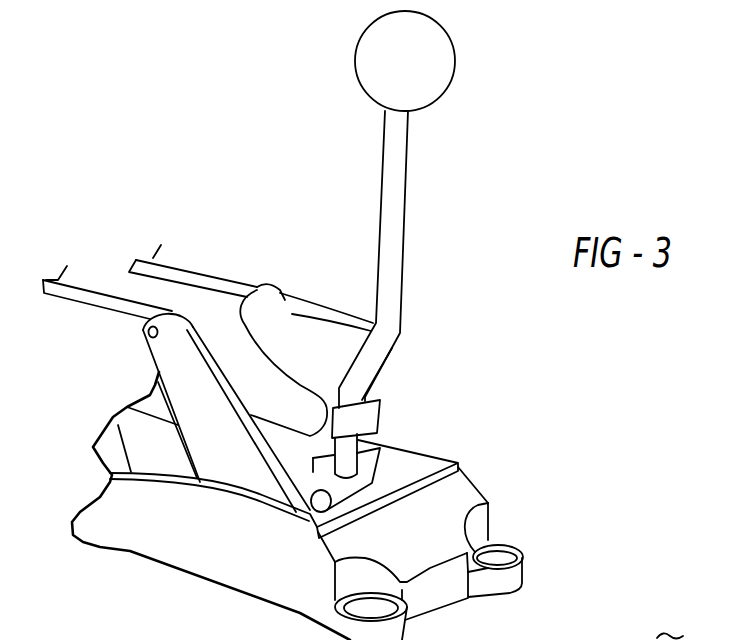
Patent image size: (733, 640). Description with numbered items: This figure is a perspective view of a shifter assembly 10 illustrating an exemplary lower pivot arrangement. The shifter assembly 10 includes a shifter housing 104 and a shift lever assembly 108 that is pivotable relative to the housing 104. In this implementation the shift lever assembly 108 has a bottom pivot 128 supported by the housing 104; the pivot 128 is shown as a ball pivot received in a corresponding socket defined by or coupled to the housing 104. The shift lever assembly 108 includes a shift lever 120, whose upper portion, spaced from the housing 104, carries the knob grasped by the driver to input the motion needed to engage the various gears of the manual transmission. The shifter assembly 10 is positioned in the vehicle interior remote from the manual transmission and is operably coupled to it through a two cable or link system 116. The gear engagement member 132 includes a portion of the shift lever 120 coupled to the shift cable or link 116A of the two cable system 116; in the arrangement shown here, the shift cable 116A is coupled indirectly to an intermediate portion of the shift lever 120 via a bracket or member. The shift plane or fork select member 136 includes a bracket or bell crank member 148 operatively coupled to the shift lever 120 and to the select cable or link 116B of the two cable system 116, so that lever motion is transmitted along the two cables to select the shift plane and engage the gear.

The shifter assembly 10 is at (510, 71).
The shifter housing 104 is at (434, 444).
The shift lever assembly 108 is at (434, 156).
The two cable or link system 116 is at (155, 226).
The shift cable or link 116A is at (207, 267).
The select cable or link 116B is at (90, 280).
The shift lever 120 is at (407, 232).
The pivot 128 is at (334, 480).
The gear engagement member 132 is at (346, 306).
The shift plane select member 136 is at (143, 355).
The bracket or bell crank member 148 is at (220, 440).